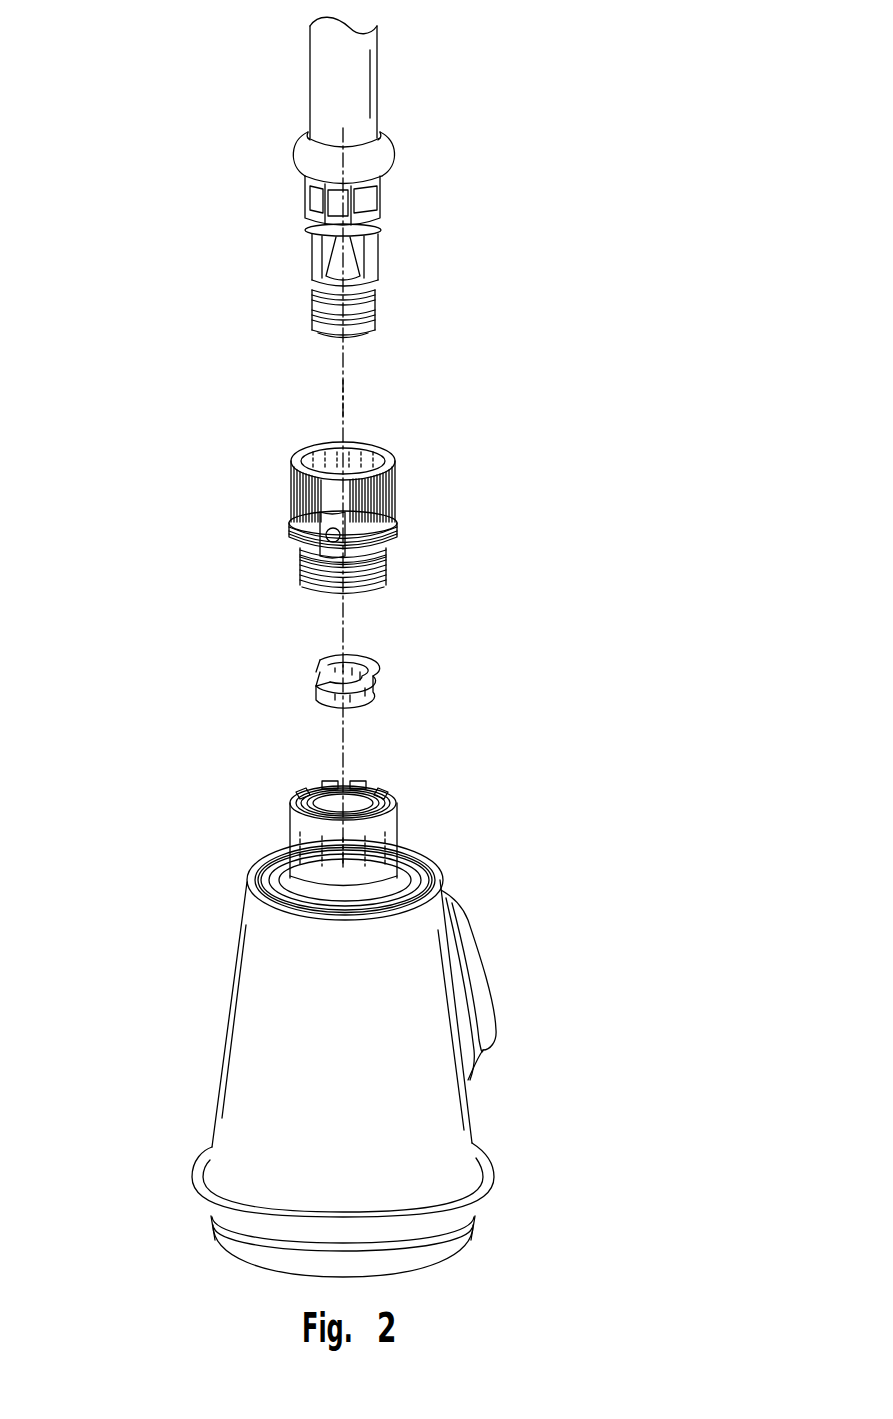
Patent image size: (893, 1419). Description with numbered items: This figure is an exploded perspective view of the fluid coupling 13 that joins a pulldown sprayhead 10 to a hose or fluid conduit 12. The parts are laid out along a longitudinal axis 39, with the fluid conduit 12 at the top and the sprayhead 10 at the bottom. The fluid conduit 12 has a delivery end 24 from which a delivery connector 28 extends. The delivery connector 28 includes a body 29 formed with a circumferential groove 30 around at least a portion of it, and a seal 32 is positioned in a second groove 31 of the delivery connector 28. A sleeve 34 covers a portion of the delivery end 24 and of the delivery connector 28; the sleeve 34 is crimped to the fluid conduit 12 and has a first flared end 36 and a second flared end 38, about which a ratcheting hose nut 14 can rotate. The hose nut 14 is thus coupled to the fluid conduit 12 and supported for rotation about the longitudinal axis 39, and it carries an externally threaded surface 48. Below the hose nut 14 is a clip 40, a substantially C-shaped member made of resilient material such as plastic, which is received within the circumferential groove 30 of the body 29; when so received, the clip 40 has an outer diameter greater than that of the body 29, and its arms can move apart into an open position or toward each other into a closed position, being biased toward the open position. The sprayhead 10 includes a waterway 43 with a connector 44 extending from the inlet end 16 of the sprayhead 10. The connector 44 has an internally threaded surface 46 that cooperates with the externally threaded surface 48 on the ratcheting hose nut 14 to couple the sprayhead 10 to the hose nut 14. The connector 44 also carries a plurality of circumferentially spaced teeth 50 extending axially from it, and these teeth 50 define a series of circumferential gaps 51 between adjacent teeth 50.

The sprayhead 10 is at (222, 1013).
The fluid conduit 12 is at (378, 60).
The fluid coupling 13 is at (212, 652).
The ratcheting hose nut 14 is at (398, 495).
The inlet end 16 is at (276, 816).
The delivery end 24 is at (188, 230).
The delivery connector 28 is at (376, 262).
The body 29 is at (376, 305).
The circumferential groove 30 is at (310, 290).
The second groove 31 is at (380, 325).
The seal 32 is at (310, 314).
The sleeve 34 is at (302, 141).
The first flared end 36 is at (396, 160).
The second flared end 38 is at (305, 214).
The longitudinal axis 39 is at (340, 393).
The clip 40 is at (376, 676).
The waterway 43 is at (250, 842).
The connector 44 is at (392, 852).
The internally threaded surface 46 is at (314, 796).
The externally threaded surface 48 is at (300, 558).
The teeth 50 is at (372, 785).
The circumferential gaps 51 is at (388, 800).